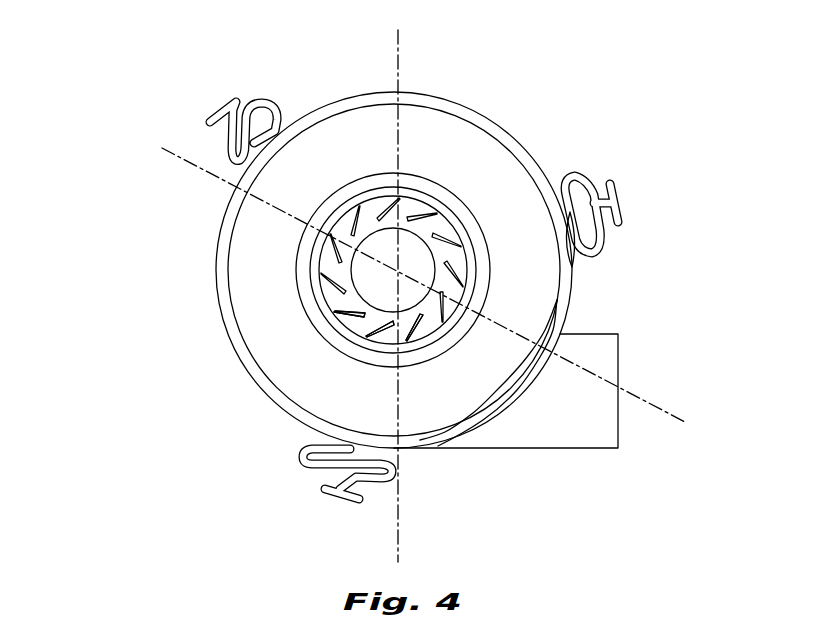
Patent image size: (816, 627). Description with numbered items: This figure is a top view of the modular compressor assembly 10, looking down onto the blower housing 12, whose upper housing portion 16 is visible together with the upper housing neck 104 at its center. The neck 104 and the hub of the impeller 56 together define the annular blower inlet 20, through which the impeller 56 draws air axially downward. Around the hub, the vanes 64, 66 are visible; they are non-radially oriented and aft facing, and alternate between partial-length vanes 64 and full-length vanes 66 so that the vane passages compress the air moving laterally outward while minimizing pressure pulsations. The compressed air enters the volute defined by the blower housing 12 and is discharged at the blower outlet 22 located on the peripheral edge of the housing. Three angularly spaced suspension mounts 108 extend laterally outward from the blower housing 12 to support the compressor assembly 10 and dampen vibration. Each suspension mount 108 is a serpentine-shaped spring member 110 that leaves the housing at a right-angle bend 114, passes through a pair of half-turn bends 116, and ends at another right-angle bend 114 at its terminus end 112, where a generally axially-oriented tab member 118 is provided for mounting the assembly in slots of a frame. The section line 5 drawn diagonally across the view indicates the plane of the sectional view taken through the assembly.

The section line 5- 5 is at (167, 164).
The modular compressor assembly 10 is at (583, 74).
The blower housing 12 is at (263, 395).
The upper housing portion 16 is at (478, 383).
The blower inlet 20 is at (464, 203).
The blower outlet 22 is at (620, 353).
The impeller 56 is at (408, 250).
The partial-length vanes 64 is at (395, 367).
The full-length vanes 66 is at (378, 326).
The upper housing neck 104 is at (297, 271).
The suspension mounts 108 is at (226, 76).
The spring member 110 is at (276, 100).
The terminus end 112 is at (212, 112).
The 90° bend 114 is at (606, 226).
The 180° bends 116 is at (572, 170).
The tab member 118 is at (622, 201).